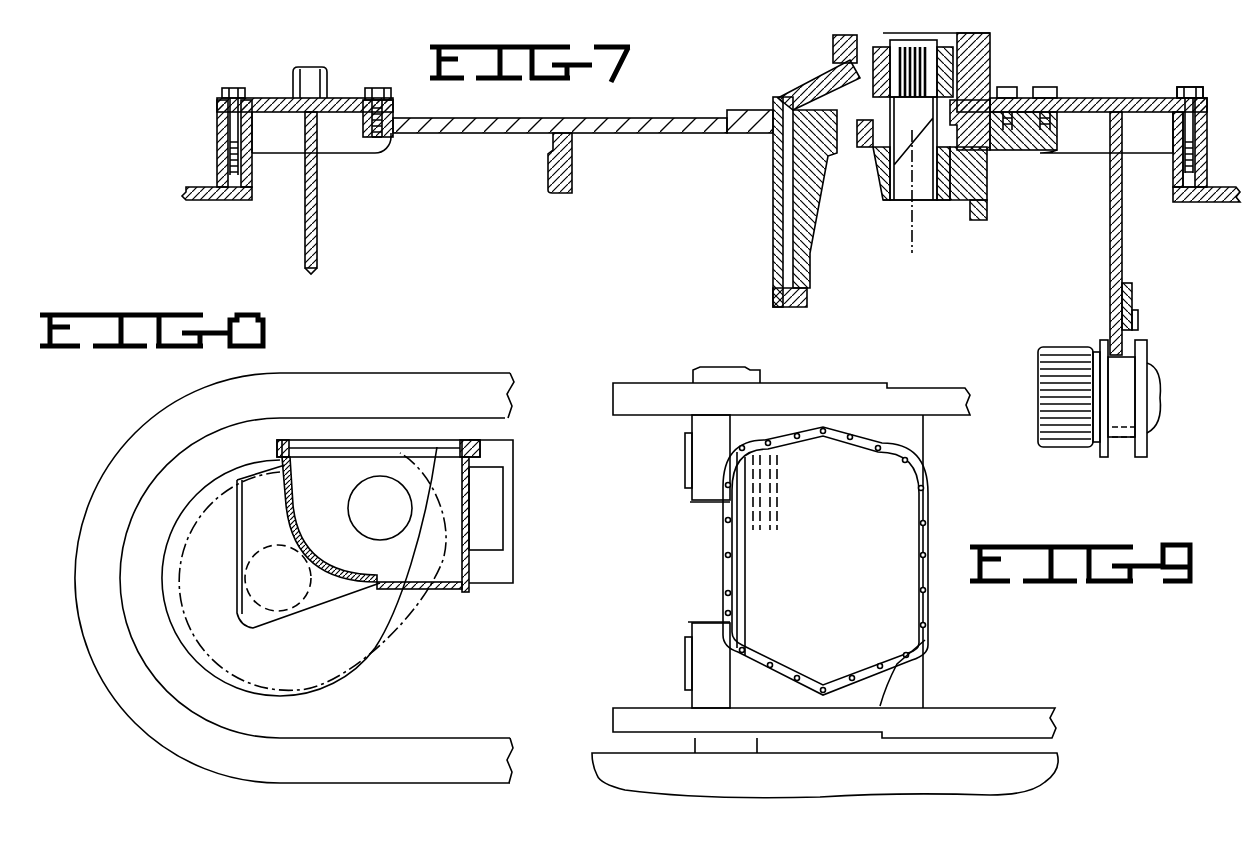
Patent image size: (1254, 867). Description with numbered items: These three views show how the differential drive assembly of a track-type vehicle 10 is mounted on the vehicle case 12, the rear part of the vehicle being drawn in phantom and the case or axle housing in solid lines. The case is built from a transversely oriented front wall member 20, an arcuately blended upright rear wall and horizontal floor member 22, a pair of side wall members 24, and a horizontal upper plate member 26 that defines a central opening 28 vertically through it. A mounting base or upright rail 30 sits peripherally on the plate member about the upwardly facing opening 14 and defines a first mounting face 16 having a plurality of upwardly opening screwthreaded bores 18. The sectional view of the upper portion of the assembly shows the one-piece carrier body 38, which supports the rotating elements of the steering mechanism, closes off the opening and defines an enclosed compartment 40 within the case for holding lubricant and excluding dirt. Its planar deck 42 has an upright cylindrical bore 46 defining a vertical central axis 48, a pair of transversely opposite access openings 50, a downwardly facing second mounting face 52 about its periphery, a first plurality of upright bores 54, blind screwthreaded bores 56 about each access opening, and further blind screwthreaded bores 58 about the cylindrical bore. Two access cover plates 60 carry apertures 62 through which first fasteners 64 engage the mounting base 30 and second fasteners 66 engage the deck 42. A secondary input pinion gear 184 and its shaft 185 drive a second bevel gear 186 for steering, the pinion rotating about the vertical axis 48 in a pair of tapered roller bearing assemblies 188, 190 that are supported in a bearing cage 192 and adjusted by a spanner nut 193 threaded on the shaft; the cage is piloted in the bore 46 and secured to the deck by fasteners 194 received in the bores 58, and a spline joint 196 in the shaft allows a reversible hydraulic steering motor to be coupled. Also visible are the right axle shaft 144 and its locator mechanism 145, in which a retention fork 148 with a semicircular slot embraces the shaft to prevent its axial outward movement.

In FIG. 8, the track-type vehicle 10 is at (112, 704).
In FIG. 9, the track-type vehicle 10 is at (1052, 790).
In FIG. 8, the vehicle case 12 is at (470, 495).
In FIG. 9, the vehicle case 12 is at (726, 563).
In FIG. 8, the opening 14 is at (296, 476).
In FIG. 9, the opening 14 is at (905, 526).
In FIG. 7, the mounting face 16 is at (224, 145).
In FIG. 8, the mounting face 16 is at (470, 446).
In FIG. 9, the mounting face 16 is at (882, 706).
In FIG. 9, the screwthreaded bores 18 is at (926, 632).
In FIG. 8, the front wall member 20 is at (470, 570).
In FIG. 8, the rear wall and floor member 22 is at (283, 518).
In FIG. 9, the rear wall and floor member 22 is at (835, 586).
In FIG. 8, the side wall members 24 is at (330, 508).
In FIG. 7, the upper plate member 26 is at (1216, 204).
In FIG. 8, the upper plate member 26 is at (280, 450).
In FIG. 9, the upper plate member 26 is at (913, 442).
In FIG. 7, the central opening 28 is at (1178, 198).
In FIG. 8, the central opening 28 is at (452, 452).
In FIG. 7, the mounting base 30 is at (1176, 178).
In FIG. 8, the mounting base 30 is at (283, 450).
In FIG. 7, the carrier body 38 is at (703, 114).
In FIG. 7, the enclosed compartment 40 is at (672, 186).
In FIG. 7, the deck 42 is at (630, 118).
In FIG. 7, the cylindrical bore 46 is at (978, 166).
In FIG. 7, the vertical axis 48 is at (918, 232).
In FIG. 7, the access openings 50 is at (248, 100).
In FIG. 7, the second mounting face 52 is at (244, 165).
In FIG. 7, the upright bores 54 is at (218, 122).
In FIG. 7, the blind screwthreaded bores 56 is at (394, 108).
In FIG. 7, the blind screwthreaded bores 58 is at (1046, 100).
In FIG. 7, the access cover plates 60 is at (304, 70).
In FIG. 7, the apertures 62 is at (350, 90).
In FIG. 7, the first fasteners 64 is at (233, 88).
In FIG. 7, the second fasteners 66 is at (381, 98).
In FIG. 7, the right axle shaft 144 is at (1066, 352).
In FIG. 7, the locator mechanism 145 is at (1133, 304).
In FIG. 7, the retention fork 148 is at (317, 222).
In FIG. 7, the secondary input pinion gear 184 is at (880, 200).
In FIG. 7, the shaft 185 is at (925, 137).
In FIG. 7, the second bevel gear 186 is at (987, 196).
In FIG. 7, the tapered roller bearing assembly 188 is at (866, 150).
In FIG. 7, the tapered roller bearing assembly 190 is at (840, 56).
In FIG. 7, the bearing cage 192 is at (808, 86).
In FIG. 7, the spanner nut 193 is at (975, 56).
In FIG. 7, the fasteners 194 is at (1007, 86).
In FIG. 7, the spline joint 196 is at (916, 52).